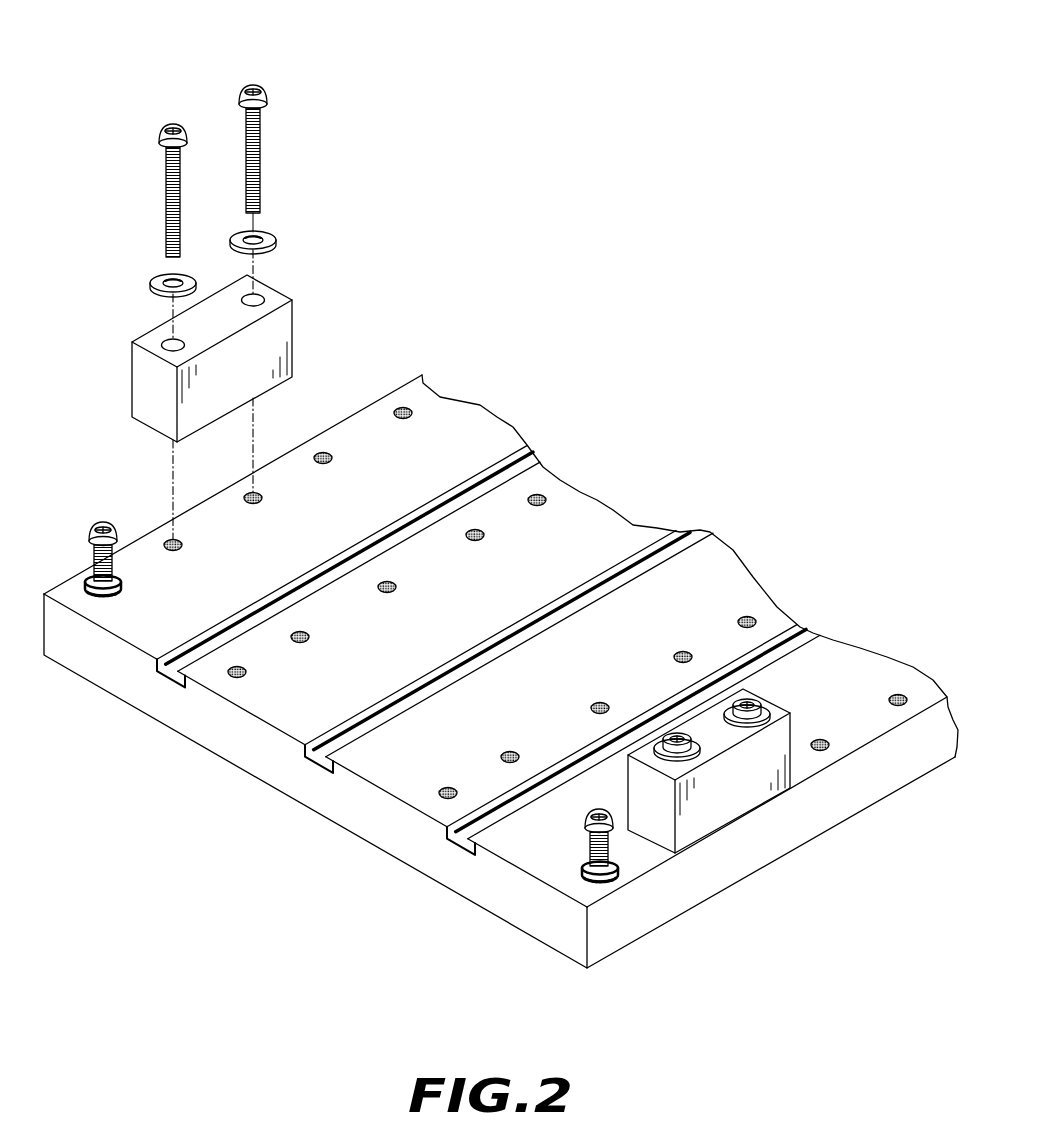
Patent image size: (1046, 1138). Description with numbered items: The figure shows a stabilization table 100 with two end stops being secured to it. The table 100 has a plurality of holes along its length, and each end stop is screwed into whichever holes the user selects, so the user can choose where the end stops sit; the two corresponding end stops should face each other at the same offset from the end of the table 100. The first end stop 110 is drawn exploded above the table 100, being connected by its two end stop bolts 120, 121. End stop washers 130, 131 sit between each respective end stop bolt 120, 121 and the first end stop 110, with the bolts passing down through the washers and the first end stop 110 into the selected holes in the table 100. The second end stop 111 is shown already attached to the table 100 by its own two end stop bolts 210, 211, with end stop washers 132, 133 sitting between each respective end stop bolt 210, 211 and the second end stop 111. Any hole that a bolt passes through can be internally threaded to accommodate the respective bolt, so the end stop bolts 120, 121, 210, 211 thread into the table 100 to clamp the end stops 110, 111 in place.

The table 100 is at (776, 496).
The first end stop 110 is at (273, 350).
The second end stop 111 is at (730, 788).
The end stop bolt 120 is at (169, 128).
The end stop bolt 121 is at (268, 97).
The end stop washer 130 is at (155, 282).
The end stop washer 131 is at (268, 238).
The end stop washer 132 is at (698, 742).
The end stop washer 133 is at (728, 707).
The end stop bolt 210 is at (675, 736).
The end stop bolt 211 is at (780, 710).